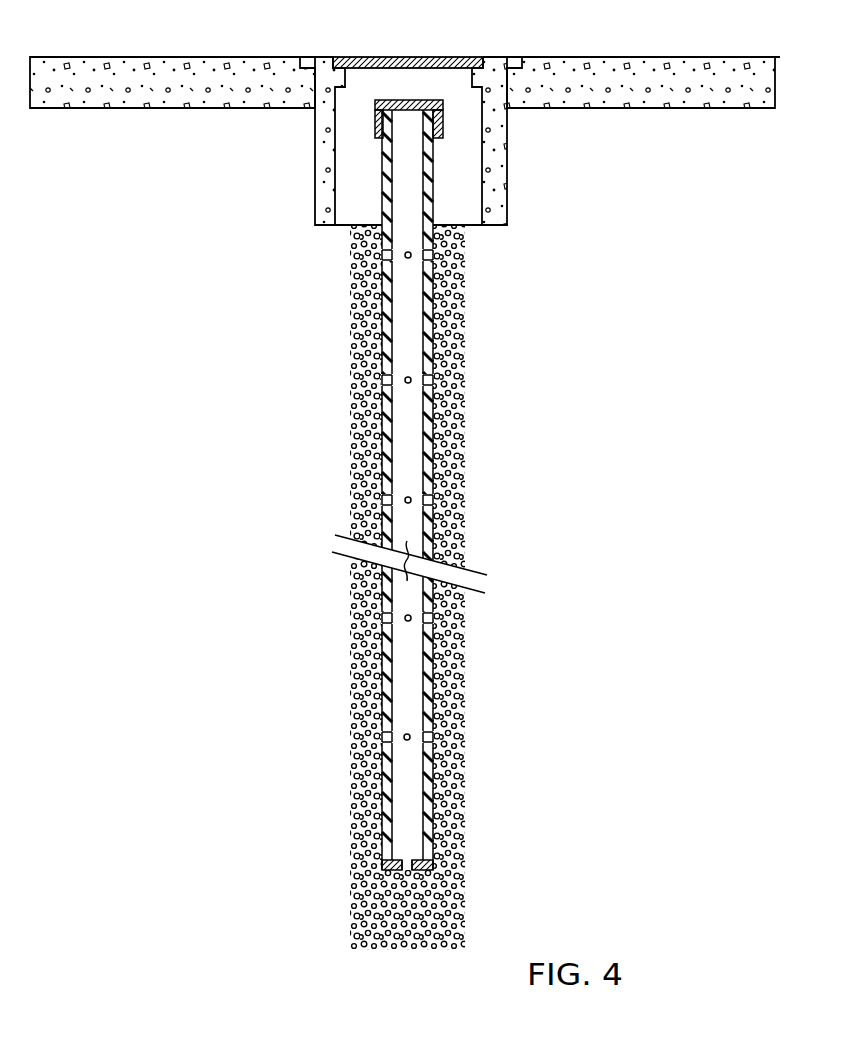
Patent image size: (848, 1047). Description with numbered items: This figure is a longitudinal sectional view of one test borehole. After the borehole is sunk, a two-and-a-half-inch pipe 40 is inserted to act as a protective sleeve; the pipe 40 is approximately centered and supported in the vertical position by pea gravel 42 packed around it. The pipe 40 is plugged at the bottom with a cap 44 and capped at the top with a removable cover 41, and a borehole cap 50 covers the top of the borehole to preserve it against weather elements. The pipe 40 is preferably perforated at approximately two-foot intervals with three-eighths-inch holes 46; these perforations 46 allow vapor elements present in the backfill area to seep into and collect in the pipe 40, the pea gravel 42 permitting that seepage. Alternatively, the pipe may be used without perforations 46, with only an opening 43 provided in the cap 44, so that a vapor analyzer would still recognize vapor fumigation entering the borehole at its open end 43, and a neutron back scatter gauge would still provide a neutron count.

The borehole cap 50 is at (439, 57).
The removable cover 41 is at (415, 100).
The holes 46 is at (407, 141).
The pipe 40 is at (432, 427).
The pea gravel 42 is at (450, 517).
The opening 43 is at (404, 870).
The cap 44 is at (423, 872).